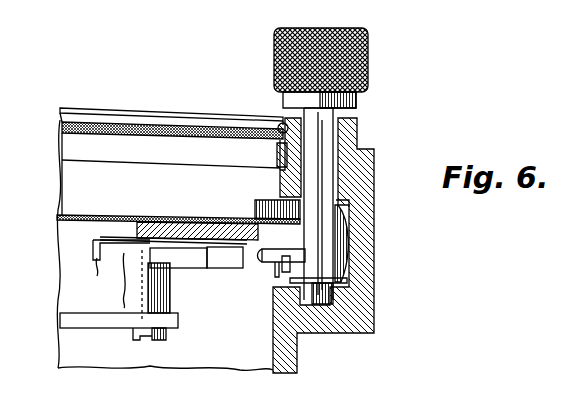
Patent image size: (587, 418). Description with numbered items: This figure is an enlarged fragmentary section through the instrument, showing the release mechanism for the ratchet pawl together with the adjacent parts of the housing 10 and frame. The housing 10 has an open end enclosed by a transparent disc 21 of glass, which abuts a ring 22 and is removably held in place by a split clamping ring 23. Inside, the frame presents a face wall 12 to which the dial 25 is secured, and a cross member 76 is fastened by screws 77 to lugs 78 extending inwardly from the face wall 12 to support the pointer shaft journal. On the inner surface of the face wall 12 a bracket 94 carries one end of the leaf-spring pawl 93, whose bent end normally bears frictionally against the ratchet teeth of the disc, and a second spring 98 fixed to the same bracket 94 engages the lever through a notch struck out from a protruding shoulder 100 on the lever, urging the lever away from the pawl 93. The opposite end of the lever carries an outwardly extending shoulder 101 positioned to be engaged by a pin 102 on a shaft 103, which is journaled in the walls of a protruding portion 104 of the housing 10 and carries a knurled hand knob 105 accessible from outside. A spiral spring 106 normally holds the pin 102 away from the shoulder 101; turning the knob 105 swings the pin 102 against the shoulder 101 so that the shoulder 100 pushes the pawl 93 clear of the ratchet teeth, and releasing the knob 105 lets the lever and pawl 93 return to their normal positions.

The housing 10 is at (306, 361).
The face wall 12 is at (196, 228).
The transparent disc 21 is at (113, 128).
The ring 22 is at (104, 153).
The split clamping ring 23 is at (187, 125).
The dial 25 is at (128, 216).
The cross member 76 is at (64, 317).
The screws 77 is at (150, 344).
The lugs 78 is at (145, 312).
The spring pawl 93 is at (181, 263).
The bracket 94 is at (221, 262).
The second spring 98 is at (140, 302).
The protruding shoulder 100 is at (98, 270).
The shoulder 101 is at (284, 262).
The pin 102 is at (260, 262).
The shaft 103 is at (320, 178).
The protruding portion 104 is at (362, 235).
The knurled hand knob 105 is at (370, 63).
The spiral spring 106 is at (340, 277).